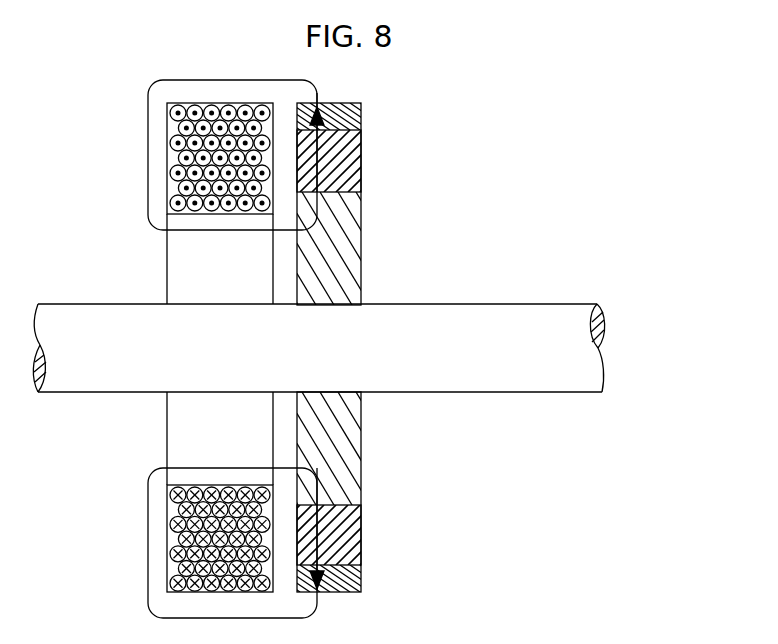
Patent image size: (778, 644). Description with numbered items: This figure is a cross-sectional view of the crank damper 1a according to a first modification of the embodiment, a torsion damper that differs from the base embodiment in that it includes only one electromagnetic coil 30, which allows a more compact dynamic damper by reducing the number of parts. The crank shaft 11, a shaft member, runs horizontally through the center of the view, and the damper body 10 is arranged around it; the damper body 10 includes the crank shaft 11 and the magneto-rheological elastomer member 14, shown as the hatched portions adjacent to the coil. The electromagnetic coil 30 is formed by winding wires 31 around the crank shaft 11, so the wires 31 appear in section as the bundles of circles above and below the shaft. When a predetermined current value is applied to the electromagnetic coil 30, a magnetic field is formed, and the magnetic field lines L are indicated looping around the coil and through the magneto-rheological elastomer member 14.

The crank damper 1a is at (463, 102).
The damper body 10 is at (340, 255).
The crank shaft 11 is at (475, 304).
The magneto-rheological elastomer member 14 is at (350, 153).
The electromagnetic coil 30 is at (167, 431).
The wires 31 is at (170, 113).
The magnetic field lines L is at (148, 163).